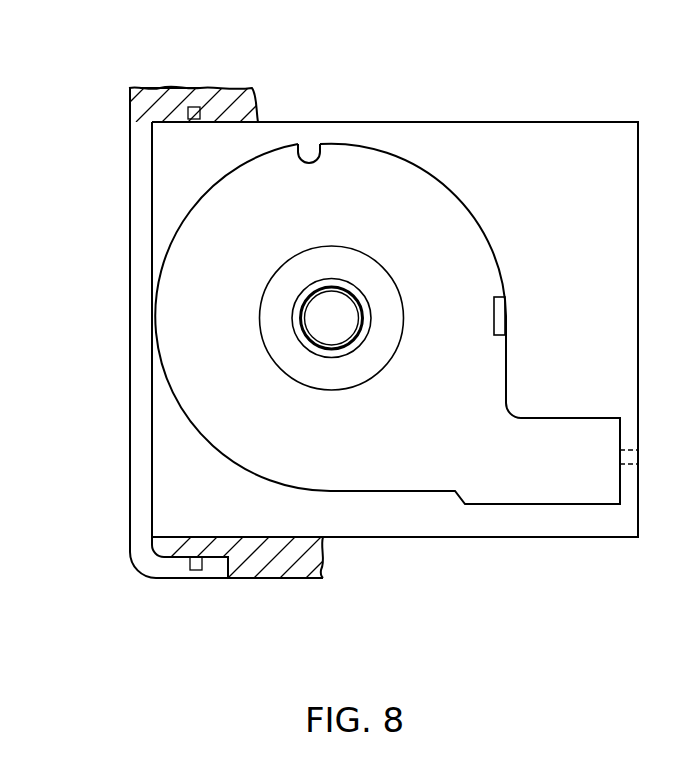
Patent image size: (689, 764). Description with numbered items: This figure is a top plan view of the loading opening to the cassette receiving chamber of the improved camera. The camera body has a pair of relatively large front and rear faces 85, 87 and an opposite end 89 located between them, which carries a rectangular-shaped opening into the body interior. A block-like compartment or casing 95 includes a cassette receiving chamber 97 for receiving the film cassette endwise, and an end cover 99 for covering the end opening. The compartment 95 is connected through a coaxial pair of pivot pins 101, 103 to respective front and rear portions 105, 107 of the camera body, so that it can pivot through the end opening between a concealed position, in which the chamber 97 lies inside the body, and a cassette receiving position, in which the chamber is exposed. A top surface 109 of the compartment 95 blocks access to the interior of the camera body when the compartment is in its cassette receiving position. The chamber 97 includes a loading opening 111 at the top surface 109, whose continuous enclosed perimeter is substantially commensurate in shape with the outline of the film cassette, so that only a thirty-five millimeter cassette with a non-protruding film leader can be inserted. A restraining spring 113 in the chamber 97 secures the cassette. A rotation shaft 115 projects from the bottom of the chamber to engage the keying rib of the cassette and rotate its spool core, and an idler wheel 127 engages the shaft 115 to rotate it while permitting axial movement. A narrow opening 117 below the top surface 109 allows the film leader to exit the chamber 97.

The front face 85 is at (297, 578).
The rear face 87 is at (240, 88).
The opposite end 89 is at (129, 103).
The compartment 95 is at (495, 122).
The cassette receiving chamber 97 is at (378, 196).
The end cover 99 is at (130, 330).
The pivot pin 101 is at (192, 572).
The pivot pin 103 is at (198, 100).
The front portion 105 is at (178, 537).
The rear portion 107 is at (162, 97).
The top surface 109 is at (580, 280).
The loading opening 111 is at (315, 146).
The restraining spring 113 is at (494, 312).
The rotation shaft 115 is at (313, 352).
The narrow opening 117 is at (620, 460).
The idler wheel 127 is at (275, 297).